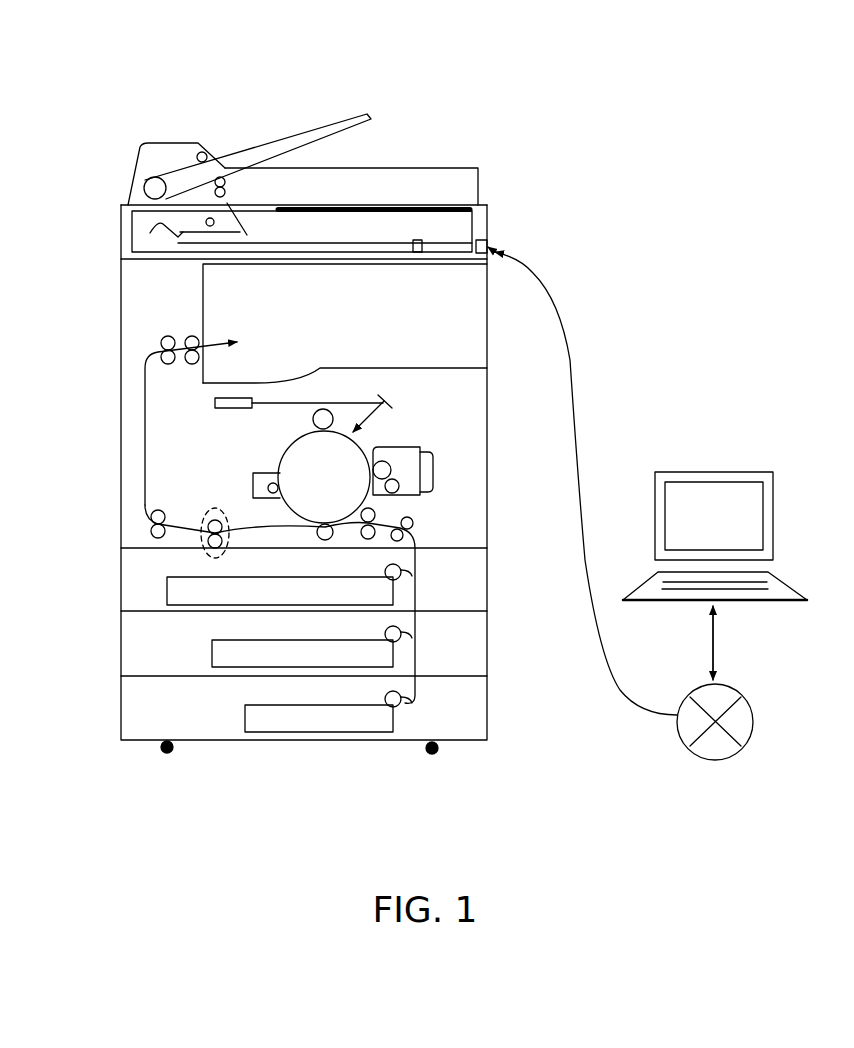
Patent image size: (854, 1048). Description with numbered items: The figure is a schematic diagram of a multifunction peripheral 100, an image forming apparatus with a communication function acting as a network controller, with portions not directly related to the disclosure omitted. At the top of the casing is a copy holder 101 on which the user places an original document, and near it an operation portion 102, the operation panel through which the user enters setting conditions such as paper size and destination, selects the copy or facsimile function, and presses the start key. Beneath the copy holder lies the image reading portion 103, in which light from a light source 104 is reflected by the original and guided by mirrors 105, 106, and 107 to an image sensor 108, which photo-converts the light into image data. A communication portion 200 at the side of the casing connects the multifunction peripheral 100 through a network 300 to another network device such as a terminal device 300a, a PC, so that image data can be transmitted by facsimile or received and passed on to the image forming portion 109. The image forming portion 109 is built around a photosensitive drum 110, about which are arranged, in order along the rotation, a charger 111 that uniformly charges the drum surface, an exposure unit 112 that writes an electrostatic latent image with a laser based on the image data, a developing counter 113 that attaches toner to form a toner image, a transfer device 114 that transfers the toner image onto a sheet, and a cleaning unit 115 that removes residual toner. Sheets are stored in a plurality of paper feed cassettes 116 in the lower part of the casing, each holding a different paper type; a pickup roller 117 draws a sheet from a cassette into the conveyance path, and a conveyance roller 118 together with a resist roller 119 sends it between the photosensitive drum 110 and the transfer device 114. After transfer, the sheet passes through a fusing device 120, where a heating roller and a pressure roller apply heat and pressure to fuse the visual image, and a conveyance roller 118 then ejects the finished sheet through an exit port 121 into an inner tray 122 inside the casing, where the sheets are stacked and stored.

The multifunction peripheral 100 is at (302, 118).
The copy holder 101 is at (378, 204).
The operation portion 102 is at (445, 205).
The image reading portion 103 is at (115, 259).
The light source 104 is at (214, 221).
The mirror 105 is at (247, 235).
The mirror 106 is at (150, 233).
The mirror 107 is at (181, 246).
The image sensor 108 is at (420, 243).
The image forming portion 109 is at (111, 532).
The photosensitive drum 110 is at (297, 458).
The charger 111 is at (312, 415).
The exposure unit 112 is at (213, 402).
The developing counter 113 is at (433, 460).
The transfer device 114 is at (320, 528).
The cleaning unit 115 is at (253, 476).
The paper feed cassette 116 is at (167, 597).
The pickup roller 117 is at (403, 572).
The conveyance roller 118 is at (153, 515).
The resist roller 119 is at (365, 532).
The fusing device 120 is at (203, 540).
The exit port 121 is at (203, 337).
The inner tray 122 is at (290, 376).
The communication portion 200 is at (490, 241).
The network 300 is at (697, 703).
The terminal device 300a is at (743, 472).